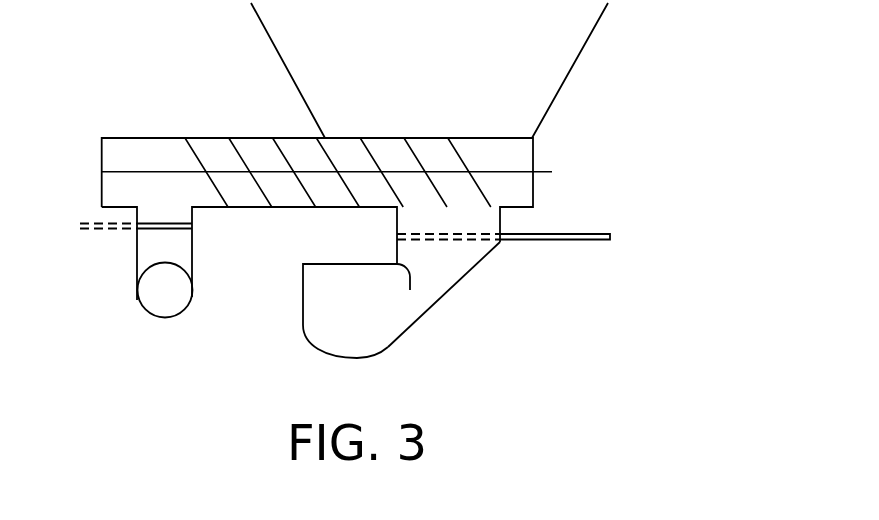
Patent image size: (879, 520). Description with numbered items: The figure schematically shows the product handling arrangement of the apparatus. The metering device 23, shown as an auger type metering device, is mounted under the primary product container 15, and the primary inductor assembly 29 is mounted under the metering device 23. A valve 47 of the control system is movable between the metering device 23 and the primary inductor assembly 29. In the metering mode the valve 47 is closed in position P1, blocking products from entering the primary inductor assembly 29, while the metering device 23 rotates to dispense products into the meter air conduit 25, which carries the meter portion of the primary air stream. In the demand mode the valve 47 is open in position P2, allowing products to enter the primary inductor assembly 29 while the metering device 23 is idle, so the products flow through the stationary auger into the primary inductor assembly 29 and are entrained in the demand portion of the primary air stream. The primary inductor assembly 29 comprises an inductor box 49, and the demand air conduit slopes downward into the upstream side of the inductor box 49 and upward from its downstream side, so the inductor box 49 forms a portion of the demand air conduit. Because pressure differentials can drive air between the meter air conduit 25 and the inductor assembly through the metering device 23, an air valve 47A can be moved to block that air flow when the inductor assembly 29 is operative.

The primary product container 15 is at (588, 42).
The metering device 23 is at (533, 155).
The valve 47 is at (550, 234).
The air valve 47A is at (153, 229).
The meter air conduit 25 is at (138, 300).
The inductor box 49 is at (305, 337).
The primary inductor assembly 29 is at (348, 358).
The closed position P1 is at (453, 240).
The open position P2 is at (573, 240).